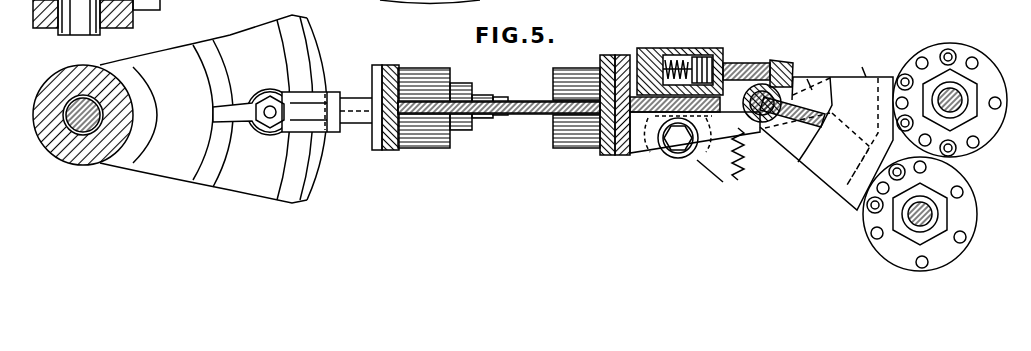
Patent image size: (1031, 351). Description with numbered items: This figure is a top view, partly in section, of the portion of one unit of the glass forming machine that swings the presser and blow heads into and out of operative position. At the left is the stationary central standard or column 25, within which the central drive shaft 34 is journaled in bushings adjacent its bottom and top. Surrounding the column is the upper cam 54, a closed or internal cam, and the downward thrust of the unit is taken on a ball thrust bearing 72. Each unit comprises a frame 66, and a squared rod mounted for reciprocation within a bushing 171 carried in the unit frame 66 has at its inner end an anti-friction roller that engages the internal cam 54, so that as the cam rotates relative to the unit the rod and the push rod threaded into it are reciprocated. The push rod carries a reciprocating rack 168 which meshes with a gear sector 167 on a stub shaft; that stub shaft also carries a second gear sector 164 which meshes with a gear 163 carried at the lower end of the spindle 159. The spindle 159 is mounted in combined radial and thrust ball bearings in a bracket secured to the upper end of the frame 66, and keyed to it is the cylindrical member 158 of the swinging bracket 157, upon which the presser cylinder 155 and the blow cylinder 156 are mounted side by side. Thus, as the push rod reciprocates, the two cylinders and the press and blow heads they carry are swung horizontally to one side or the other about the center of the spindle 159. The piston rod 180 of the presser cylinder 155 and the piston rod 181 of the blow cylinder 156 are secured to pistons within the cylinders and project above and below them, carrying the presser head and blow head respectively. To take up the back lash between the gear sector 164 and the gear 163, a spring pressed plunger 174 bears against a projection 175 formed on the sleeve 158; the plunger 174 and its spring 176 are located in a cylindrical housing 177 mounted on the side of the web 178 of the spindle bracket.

The central standard or column 25 is at (93, 150).
The central drive shaft 34 is at (78, 117).
The upper cam 54 is at (315, 192).
The ball thrust bearing 72 is at (252, 136).
The bushing 171 is at (443, 122).
The frame 66 is at (530, 108).
The web 178 is at (620, 157).
The cylindrical housing 177 is at (705, 55).
The spring 176 is at (675, 62).
The gear sector 167 is at (638, 157).
The reciprocating rack 168 is at (697, 160).
The gear sector 164 is at (733, 187).
The spring pressed plunger 174 is at (750, 62).
The projection 175 is at (782, 82).
The cylindrical member 158 is at (776, 142).
The swinging bracket 157 is at (831, 178).
The spindle 159 is at (807, 79).
The gear 163 is at (862, 67).
The blow cylinder 156 is at (967, 47).
The piston rod 181 is at (960, 96).
The presser cylinder 155 is at (878, 254).
The piston rod 180 is at (932, 213).